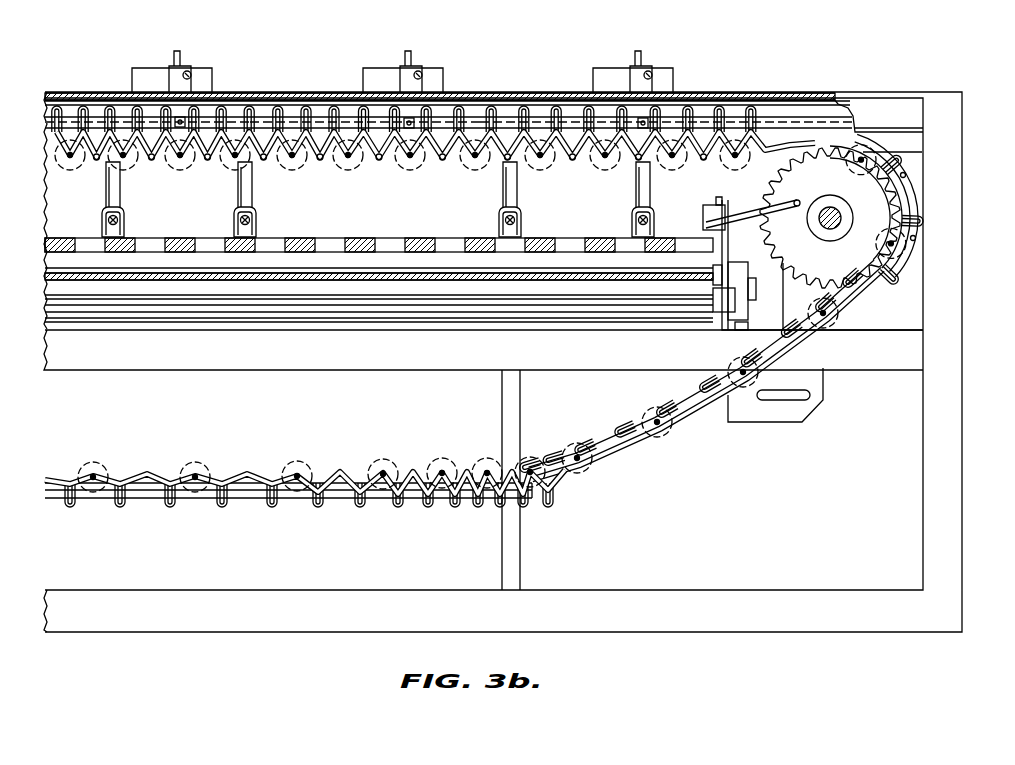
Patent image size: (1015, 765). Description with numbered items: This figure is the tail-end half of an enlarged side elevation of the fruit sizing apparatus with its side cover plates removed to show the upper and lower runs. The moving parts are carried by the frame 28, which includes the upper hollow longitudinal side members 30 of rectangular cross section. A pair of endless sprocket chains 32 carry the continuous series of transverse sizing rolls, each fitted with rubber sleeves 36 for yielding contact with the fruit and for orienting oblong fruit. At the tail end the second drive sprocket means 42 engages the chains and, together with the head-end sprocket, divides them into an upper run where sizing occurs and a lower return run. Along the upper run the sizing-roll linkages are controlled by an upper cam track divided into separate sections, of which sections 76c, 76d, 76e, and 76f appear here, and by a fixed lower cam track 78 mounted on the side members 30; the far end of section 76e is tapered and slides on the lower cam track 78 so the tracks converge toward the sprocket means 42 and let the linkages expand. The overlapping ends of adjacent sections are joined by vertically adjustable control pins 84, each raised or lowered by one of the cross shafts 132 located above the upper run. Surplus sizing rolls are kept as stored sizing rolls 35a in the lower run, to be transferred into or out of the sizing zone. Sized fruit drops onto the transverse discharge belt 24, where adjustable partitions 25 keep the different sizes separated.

The transverse discharge belt 24 is at (295, 239).
The adjustable partitions 25 is at (126, 229).
The frame 28 is at (962, 295).
The upper hollow longitudinal side members 30 is at (813, 122).
The endless sprocket chains 32 is at (222, 472).
The stored sizing rolls 35a is at (575, 438).
The rubber sleeves 36 is at (468, 162).
The second drive sprocket means 42 is at (788, 257).
The upper cam track section 76c is at (95, 125).
The upper cam track section 76d is at (290, 122).
The upper cam track section 76e is at (505, 122).
The upper cam track section 76f is at (710, 125).
The lower cam track 78 is at (704, 155).
The control pins 84 is at (183, 120).
The cross shafts 132 is at (190, 77).